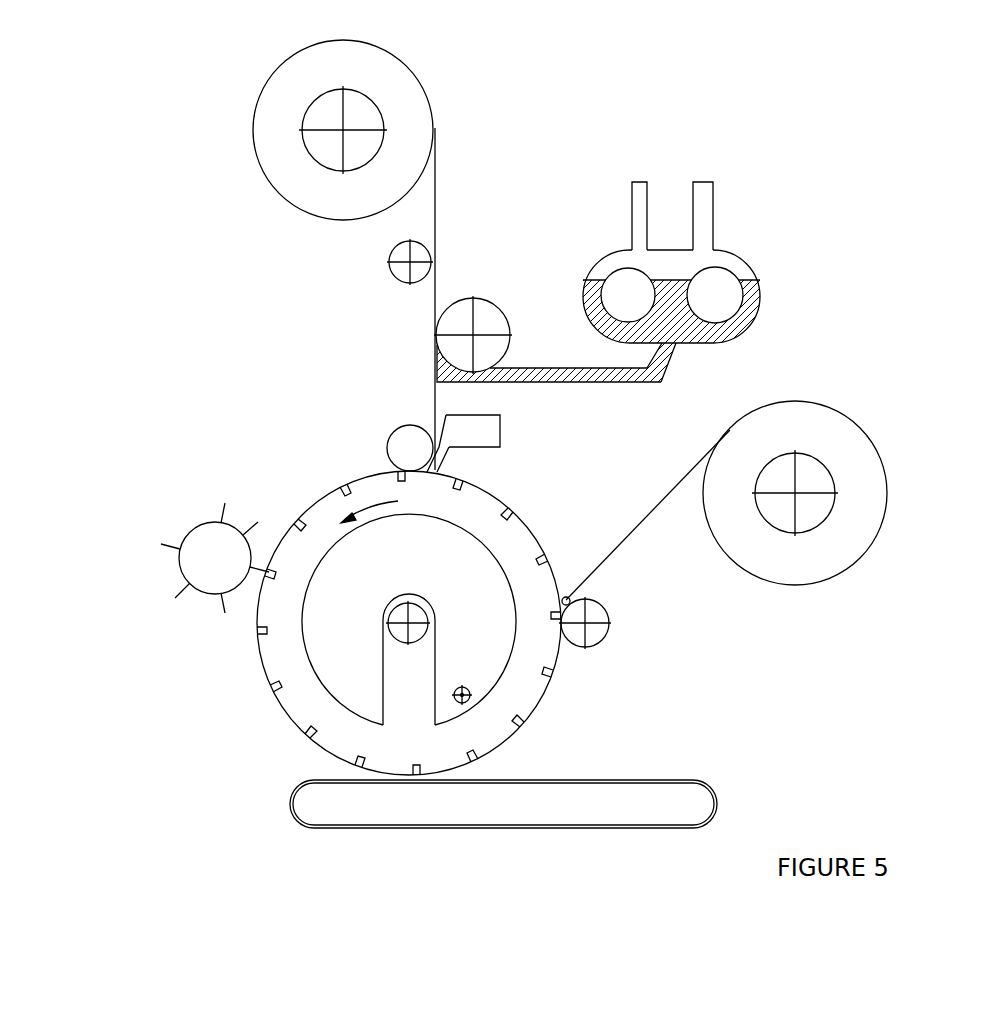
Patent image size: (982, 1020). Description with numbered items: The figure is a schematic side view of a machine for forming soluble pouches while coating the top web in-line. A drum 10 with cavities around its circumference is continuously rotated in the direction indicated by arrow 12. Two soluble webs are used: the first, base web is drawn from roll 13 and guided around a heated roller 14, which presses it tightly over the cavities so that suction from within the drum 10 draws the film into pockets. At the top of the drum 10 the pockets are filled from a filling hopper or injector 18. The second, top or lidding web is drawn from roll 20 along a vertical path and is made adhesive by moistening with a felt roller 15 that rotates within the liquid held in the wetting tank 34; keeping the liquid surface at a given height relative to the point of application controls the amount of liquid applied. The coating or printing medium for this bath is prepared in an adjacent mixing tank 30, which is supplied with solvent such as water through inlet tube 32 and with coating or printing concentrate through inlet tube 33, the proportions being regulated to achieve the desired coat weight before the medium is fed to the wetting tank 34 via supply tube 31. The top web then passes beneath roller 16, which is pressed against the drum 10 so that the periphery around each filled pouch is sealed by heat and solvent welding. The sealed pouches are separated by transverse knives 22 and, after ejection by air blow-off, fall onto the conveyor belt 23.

The drum 10 is at (528, 685).
The arrow 12 is at (372, 507).
The roll 13 is at (873, 443).
The heated roller 14 is at (607, 610).
The felt roller 15 is at (492, 302).
The heated roller 16 is at (397, 430).
The filling hopper or injector 18 is at (502, 437).
The roll 20 is at (280, 187).
The transverse knives 22 is at (188, 532).
The conveyor belt 23 is at (288, 802).
The mixing tank 30 is at (760, 293).
The supply tube 31 is at (653, 377).
The inlet tube 32 is at (630, 212).
The inlet tube 33 is at (712, 207).
The wetting tank 34 is at (533, 382).